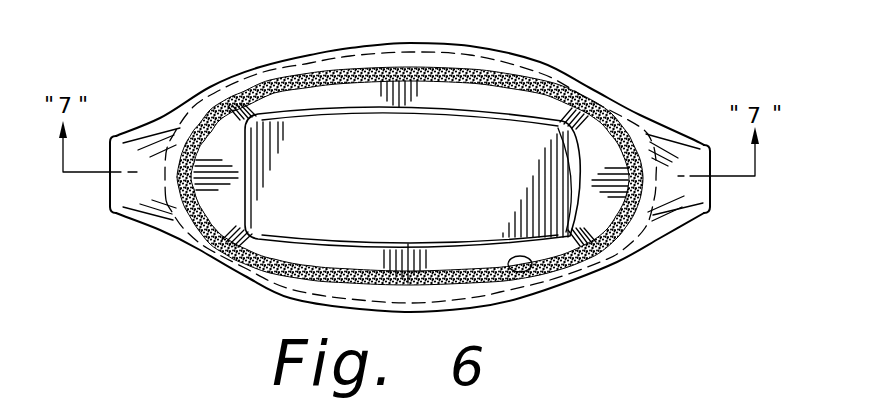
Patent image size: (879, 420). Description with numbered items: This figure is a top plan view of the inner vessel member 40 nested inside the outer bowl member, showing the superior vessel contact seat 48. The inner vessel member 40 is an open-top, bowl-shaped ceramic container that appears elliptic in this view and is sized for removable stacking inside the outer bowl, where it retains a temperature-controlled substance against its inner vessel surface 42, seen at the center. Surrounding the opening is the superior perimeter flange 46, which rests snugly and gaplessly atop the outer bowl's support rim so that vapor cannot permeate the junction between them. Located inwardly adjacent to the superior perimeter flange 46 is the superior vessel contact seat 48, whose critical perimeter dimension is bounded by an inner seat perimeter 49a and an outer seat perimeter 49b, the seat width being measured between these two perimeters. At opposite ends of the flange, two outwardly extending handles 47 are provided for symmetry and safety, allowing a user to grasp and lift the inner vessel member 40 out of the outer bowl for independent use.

The inner vessel member 40 is at (201, 97).
The inner vessel surface 42 is at (523, 107).
The superior perimeter flange 46 is at (185, 250).
The outwardly extending handle 47 is at (128, 133).
The superior vessel contact seat 48 is at (282, 84).
The inner seat perimeter 49a is at (533, 268).
The outer seat perimeter 49b is at (603, 249).